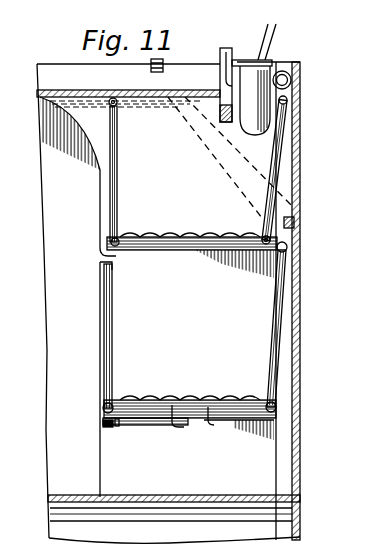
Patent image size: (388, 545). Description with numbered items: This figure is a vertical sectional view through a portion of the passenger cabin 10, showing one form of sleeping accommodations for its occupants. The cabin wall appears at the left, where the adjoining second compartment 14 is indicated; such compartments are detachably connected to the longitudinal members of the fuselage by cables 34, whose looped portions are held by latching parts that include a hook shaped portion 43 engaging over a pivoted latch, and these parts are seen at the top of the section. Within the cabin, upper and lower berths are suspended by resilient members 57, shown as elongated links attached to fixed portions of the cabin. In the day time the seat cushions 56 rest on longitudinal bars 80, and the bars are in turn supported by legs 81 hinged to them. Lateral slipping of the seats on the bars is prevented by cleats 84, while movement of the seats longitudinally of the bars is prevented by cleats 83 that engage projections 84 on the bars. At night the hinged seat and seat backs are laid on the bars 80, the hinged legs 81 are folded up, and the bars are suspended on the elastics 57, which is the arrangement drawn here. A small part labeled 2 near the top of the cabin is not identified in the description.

The clamp 2 is at (155, 58).
The passenger cabin 10 is at (300, 313).
The second compartment 14 is at (40, 148).
The cables 34 is at (271, 33).
The hook shaped portion 43 is at (225, 49).
The seat cushions 56 is at (167, 250).
The resilient members 57 is at (118, 190).
The longitudinal bars 80 is at (107, 428).
The legs 81 is at (231, 398).
The cleats 83 is at (103, 423).
The cleats 84 is at (117, 428).